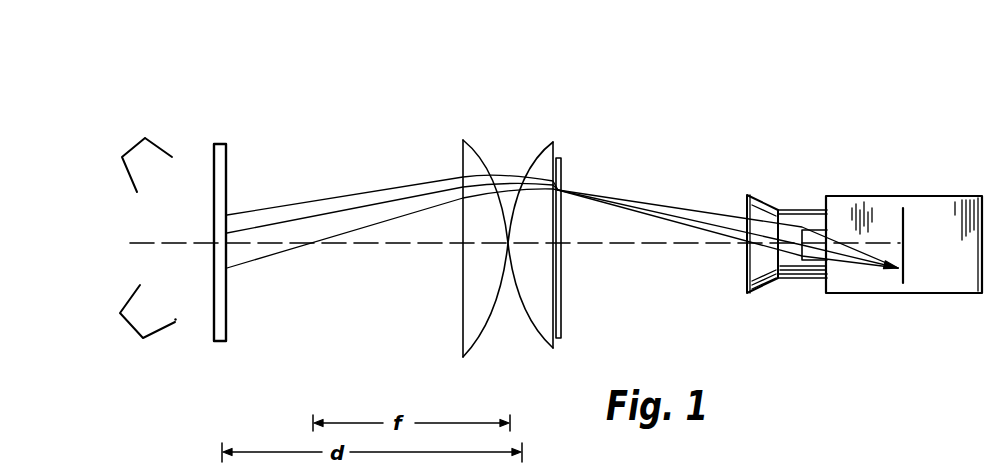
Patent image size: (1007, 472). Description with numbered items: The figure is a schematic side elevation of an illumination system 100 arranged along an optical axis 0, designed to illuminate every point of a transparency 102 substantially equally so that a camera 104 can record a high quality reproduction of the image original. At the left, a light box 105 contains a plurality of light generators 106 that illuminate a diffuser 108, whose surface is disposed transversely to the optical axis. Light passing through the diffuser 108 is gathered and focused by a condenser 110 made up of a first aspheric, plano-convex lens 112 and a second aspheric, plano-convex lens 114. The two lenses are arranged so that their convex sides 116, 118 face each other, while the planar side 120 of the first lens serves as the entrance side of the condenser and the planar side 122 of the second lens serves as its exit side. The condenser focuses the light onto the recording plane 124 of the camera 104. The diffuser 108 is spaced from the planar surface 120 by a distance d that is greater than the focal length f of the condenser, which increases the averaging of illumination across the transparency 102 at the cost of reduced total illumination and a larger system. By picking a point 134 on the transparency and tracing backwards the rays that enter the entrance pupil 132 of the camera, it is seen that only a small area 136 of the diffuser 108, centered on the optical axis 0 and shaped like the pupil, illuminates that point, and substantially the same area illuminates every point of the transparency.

The optical axis 0 is at (129, 243).
The illumination system 100 is at (331, 75).
The transparency 102 is at (561, 168).
The camera 104 is at (932, 196).
The light box 105 is at (182, 357).
The light generators 106 is at (129, 147).
The diffuser 108 is at (220, 144).
The condenser 110 is at (518, 110).
The first aspheric, plano-convex lens 112 is at (450, 246).
The second aspheric, plano-convex lens 114 is at (574, 250).
The convex side of first lens 116 is at (473, 150).
The convex side of second lens 118 is at (538, 151).
The planar side of first lens 120 is at (462, 282).
The planar side of second lens 122 is at (550, 347).
The recording plane 124 is at (903, 278).
The entrance pupil 132 is at (800, 234).
The point on transparency 134 is at (560, 190).
The area of diffuser 136 is at (229, 227).